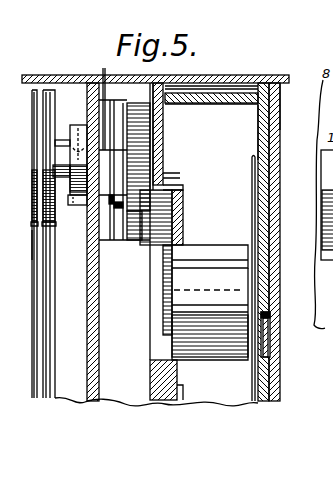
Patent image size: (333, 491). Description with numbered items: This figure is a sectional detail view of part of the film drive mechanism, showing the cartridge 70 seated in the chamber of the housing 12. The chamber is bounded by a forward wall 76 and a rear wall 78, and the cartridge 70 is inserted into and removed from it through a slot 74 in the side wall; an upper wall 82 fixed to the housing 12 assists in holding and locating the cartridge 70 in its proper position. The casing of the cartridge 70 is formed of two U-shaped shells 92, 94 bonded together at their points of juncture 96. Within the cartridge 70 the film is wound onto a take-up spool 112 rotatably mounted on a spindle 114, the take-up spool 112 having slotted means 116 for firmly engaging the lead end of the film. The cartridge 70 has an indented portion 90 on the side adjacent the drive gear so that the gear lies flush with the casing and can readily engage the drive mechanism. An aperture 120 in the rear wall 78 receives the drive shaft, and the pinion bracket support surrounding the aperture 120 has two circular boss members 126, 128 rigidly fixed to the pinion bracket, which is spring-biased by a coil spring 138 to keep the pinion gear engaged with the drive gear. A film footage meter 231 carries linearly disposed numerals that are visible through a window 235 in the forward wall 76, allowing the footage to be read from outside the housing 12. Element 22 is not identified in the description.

The cartridge 70 is at (237, 76).
The upper wall 82 is at (258, 86).
The points of juncture 96 is at (281, 106).
The U-shaped shell 94 is at (259, 134).
The U-shaped shell 92 is at (163, 150).
The film footage meter 231 is at (252, 184).
The take-up spool 112 is at (195, 246).
The slotted means 116 is at (236, 240).
The spindle 114 is at (228, 290).
The forward wall 76 is at (280, 283).
The window 235 is at (270, 352).
The rear wall 78 is at (82, 394).
The indented portion 90 is at (122, 393).
The circular boss member 126 is at (94, 222).
The aperture 120 is at (79, 132).
The circular boss member 128 is at (105, 125).
The coil spring 138 is at (104, 70).
The arm 22 is at (60, 148).
The housing 12 is at (31, 162).
The slot 74 is at (0, 238).